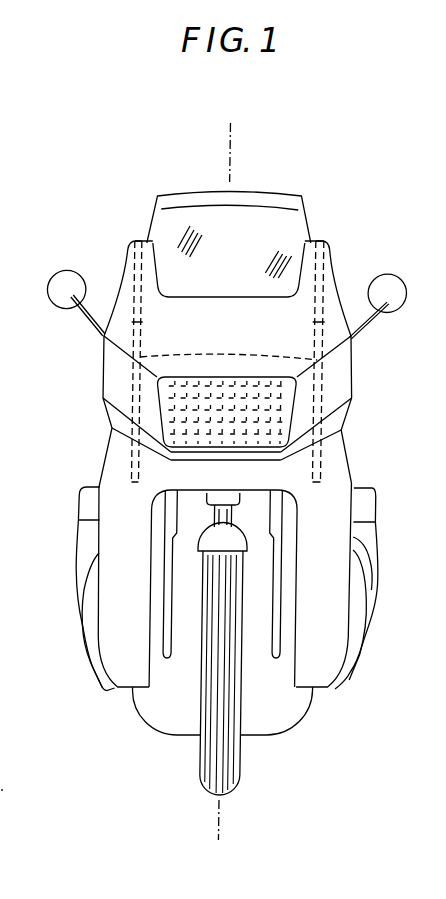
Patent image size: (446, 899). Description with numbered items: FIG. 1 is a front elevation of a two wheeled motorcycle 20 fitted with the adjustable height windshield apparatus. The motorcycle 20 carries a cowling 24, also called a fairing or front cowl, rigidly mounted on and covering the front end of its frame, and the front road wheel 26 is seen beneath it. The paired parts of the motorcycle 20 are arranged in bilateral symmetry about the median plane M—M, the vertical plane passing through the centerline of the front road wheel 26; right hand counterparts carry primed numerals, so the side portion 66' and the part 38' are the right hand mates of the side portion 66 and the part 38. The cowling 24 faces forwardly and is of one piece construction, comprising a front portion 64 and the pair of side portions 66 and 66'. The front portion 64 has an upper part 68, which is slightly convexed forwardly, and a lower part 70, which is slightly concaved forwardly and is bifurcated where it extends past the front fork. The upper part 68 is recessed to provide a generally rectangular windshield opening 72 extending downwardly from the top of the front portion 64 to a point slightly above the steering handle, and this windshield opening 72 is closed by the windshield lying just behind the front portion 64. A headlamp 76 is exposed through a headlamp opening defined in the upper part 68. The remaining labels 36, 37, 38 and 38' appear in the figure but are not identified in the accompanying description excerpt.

The motorcycle 20 is at (100, 160).
The cowling 24 is at (348, 452).
The front road wheel 26 is at (207, 773).
The windshield 36 is at (310, 211).
The windshield upper edge 37 is at (157, 215).
The frame member 38 is at (275, 361).
The frame member 38' is at (94, 361).
The front portion 64 is at (217, 305).
The side portion 66 is at (346, 429).
The side portion 66' is at (109, 429).
The upper part 68 is at (187, 313).
The lower part 70 is at (124, 604).
The windshield opening 72 is at (248, 298).
The headlamp 76 is at (175, 433).